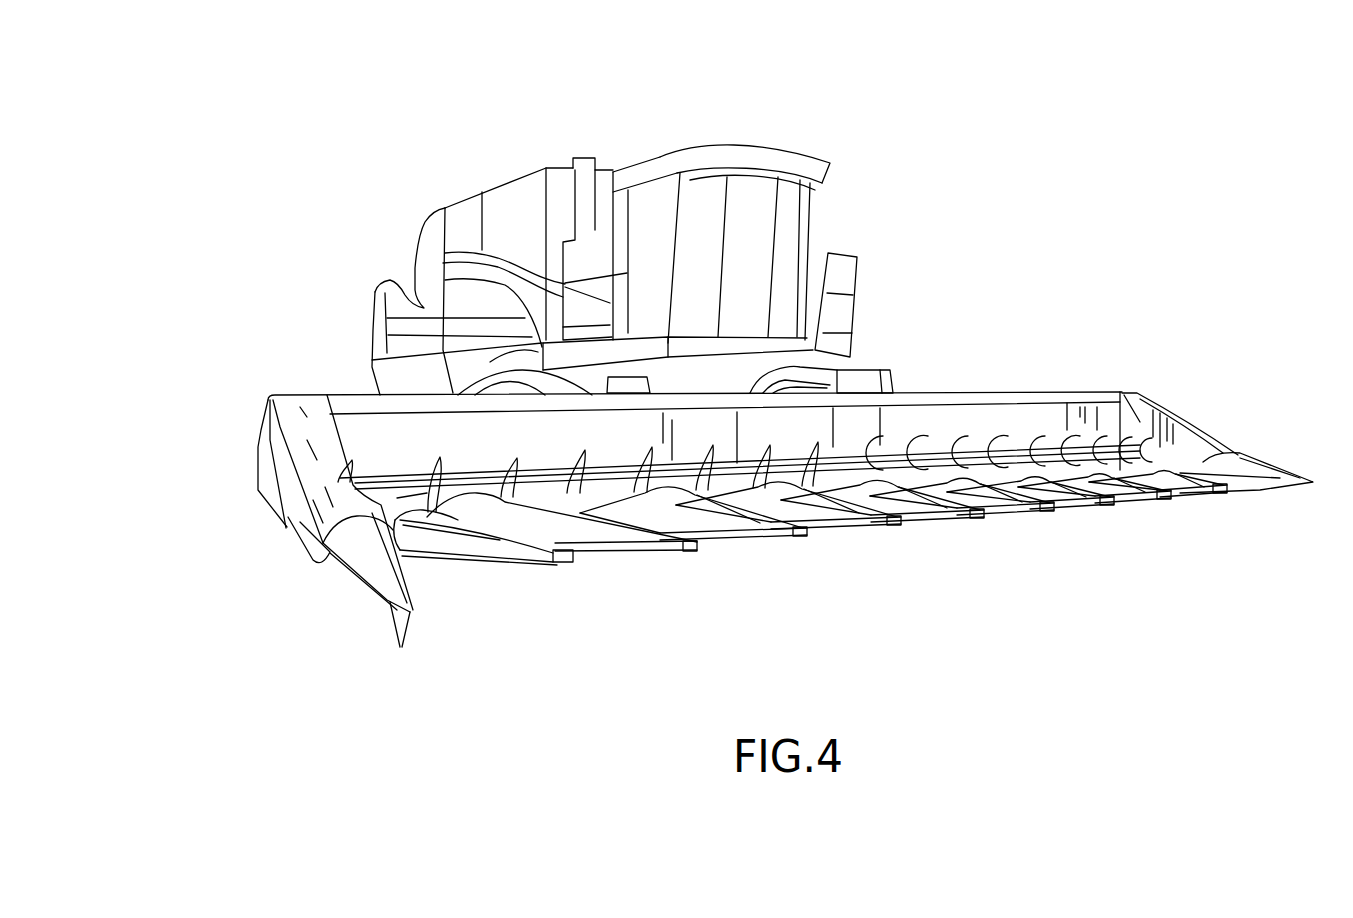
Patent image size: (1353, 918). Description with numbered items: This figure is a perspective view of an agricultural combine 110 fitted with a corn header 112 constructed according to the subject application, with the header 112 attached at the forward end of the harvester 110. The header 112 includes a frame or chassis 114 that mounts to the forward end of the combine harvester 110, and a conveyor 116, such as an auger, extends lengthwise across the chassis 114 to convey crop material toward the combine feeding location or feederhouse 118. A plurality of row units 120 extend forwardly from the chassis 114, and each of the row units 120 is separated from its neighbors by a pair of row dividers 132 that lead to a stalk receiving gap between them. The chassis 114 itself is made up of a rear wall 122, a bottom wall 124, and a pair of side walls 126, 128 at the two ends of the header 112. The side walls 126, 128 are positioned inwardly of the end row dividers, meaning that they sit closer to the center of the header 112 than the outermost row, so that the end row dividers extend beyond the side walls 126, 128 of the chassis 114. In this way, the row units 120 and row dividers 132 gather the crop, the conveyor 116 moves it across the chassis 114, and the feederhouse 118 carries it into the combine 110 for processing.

The agricultural harvester or combine 110 is at (490, 145).
The header 112 is at (972, 360).
The frame or chassis 114 is at (1004, 397).
The conveyor 116 is at (583, 461).
The combine feeding location or feederhouse 118 is at (760, 435).
The row units 120 is at (922, 528).
The rear wall 122 is at (410, 458).
The bottom wall 124 is at (298, 552).
The side wall 126 is at (262, 474).
The side wall 128 is at (1140, 425).
The row dividers 132 is at (727, 545).